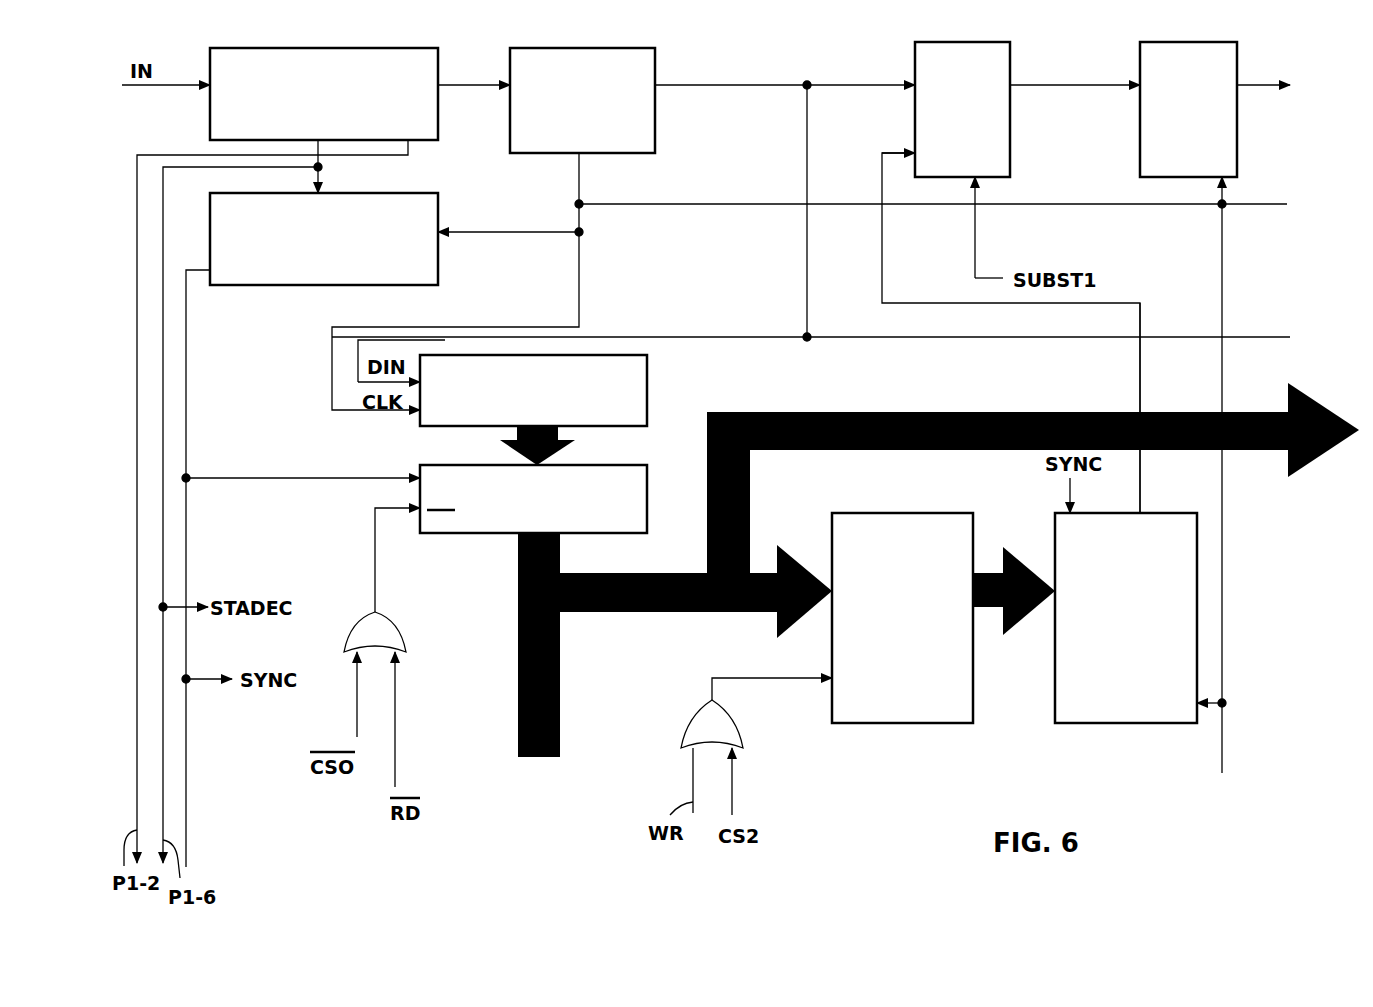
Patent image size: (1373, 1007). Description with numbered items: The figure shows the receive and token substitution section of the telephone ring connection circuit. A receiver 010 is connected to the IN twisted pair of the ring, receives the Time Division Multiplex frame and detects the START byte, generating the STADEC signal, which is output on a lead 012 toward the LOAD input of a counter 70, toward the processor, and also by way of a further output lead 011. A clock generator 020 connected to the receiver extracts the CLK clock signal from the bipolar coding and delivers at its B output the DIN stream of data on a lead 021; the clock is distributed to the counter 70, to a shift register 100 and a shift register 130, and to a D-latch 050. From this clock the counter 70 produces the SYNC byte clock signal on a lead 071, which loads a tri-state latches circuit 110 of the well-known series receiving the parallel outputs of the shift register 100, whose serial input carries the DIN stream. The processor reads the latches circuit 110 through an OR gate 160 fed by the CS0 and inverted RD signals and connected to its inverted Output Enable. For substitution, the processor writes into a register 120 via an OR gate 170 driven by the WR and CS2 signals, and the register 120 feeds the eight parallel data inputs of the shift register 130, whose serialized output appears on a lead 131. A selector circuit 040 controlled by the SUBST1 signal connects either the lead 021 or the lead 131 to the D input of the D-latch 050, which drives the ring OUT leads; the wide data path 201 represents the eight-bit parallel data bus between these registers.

The receiver 010 is at (438, 52).
The STODEC output line 011 is at (408, 155).
The lead 012 is at (163, 178).
The clock generator 020 is at (655, 58).
The lead 021 is at (716, 85).
The selector circuit 040 is at (1010, 57).
The D-latch 050 is at (1237, 57).
The 3-bits counter 70 is at (438, 198).
The lead 071 is at (186, 372).
The shift register 100 is at (647, 395).
The tri-state latches circuit 110 is at (647, 503).
The register 120 is at (973, 522).
The shift register 130 is at (1055, 700).
The lead 131 is at (1140, 500).
The OR gate 160 is at (397, 632).
The OR gate 170 is at (735, 727).
The data bus 201 is at (560, 698).